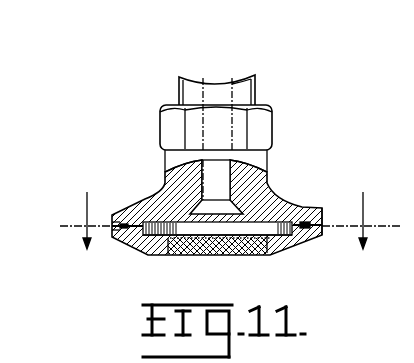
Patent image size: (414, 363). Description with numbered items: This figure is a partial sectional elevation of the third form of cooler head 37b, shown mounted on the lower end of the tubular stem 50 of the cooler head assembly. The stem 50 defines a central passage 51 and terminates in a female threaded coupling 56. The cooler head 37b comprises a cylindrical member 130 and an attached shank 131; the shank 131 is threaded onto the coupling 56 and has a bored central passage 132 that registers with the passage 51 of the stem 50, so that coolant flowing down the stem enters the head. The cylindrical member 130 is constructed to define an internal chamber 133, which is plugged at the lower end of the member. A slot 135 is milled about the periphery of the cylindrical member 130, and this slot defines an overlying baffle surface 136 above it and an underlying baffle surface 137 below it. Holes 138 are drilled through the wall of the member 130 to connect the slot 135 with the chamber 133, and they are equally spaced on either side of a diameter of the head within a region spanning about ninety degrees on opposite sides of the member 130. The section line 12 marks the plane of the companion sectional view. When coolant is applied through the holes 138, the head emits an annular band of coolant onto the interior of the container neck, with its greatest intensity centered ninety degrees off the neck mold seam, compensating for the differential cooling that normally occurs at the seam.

The section line 12- 12 is at (231, 208).
The tubular stem 50 is at (252, 86).
The passage 51 is at (218, 92).
The female threaded coupling 56 is at (265, 123).
The cylindrical member 130 is at (292, 205).
The shank 131 is at (268, 173).
The bored central passage 132 is at (218, 180).
The chamber 133 is at (217, 228).
The slot 135 is at (111, 228).
The overlying baffle surface 136 is at (301, 208).
The underlying baffle surface 137 is at (316, 235).
The holes 138 is at (129, 226).
The cooler head 37b is at (296, 257).